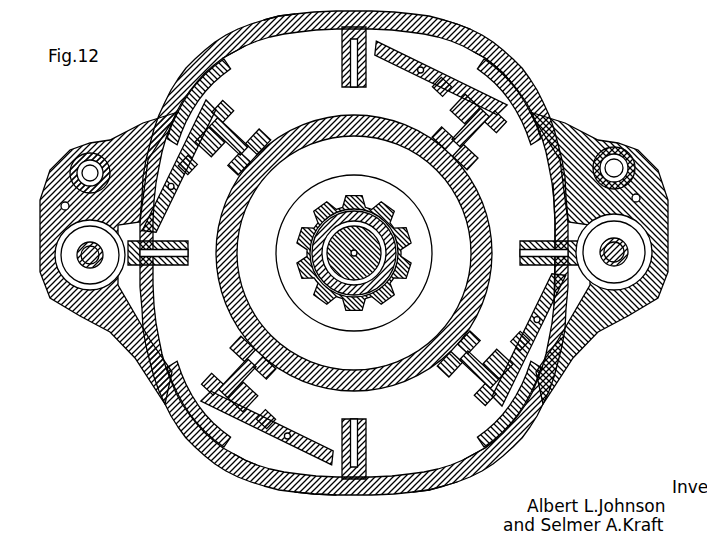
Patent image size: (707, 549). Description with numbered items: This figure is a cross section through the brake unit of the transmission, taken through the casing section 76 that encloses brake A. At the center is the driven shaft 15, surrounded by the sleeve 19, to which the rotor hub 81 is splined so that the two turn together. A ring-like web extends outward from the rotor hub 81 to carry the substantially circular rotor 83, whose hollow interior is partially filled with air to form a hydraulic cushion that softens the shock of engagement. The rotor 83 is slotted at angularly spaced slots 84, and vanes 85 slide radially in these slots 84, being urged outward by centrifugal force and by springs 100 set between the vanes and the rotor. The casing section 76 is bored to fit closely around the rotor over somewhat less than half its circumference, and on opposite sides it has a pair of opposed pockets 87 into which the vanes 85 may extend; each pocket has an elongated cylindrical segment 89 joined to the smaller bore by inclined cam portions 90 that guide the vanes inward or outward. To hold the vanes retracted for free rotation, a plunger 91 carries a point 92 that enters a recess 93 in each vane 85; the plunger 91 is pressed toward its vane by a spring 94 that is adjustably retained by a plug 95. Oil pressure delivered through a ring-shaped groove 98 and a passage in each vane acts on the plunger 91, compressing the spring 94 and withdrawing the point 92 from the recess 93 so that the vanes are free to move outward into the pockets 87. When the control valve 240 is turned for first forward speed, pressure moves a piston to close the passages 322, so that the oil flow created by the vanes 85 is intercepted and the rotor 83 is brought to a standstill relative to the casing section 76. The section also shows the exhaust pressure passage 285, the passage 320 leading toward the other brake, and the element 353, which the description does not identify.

The driven shaft 15 is at (350, 262).
The sleeve 19 is at (393, 206).
The casing section 76 is at (312, 478).
The rotor hub 81 is at (350, 172).
The rotor 83 is at (530, 197).
The slots 84 is at (472, 162).
The vanes 85 is at (522, 96).
The pockets 87 is at (464, 62).
The cylindrical segments 89 is at (262, 44).
The inclined cam portions 90 is at (152, 138).
The plunger 91 is at (490, 72).
The point 92 is at (452, 108).
The recess 93 is at (496, 130).
The spring 94 is at (430, 92).
The plug 95 is at (412, 50).
The ring-shaped groove 98 is at (342, 71).
The springs 100 is at (438, 147).
The control valve 240 is at (85, 156).
The exhaust pressure passage 285 is at (62, 205).
The passage 320 is at (585, 318).
The passages 322 is at (148, 200).
The bolt 353 is at (86, 172).